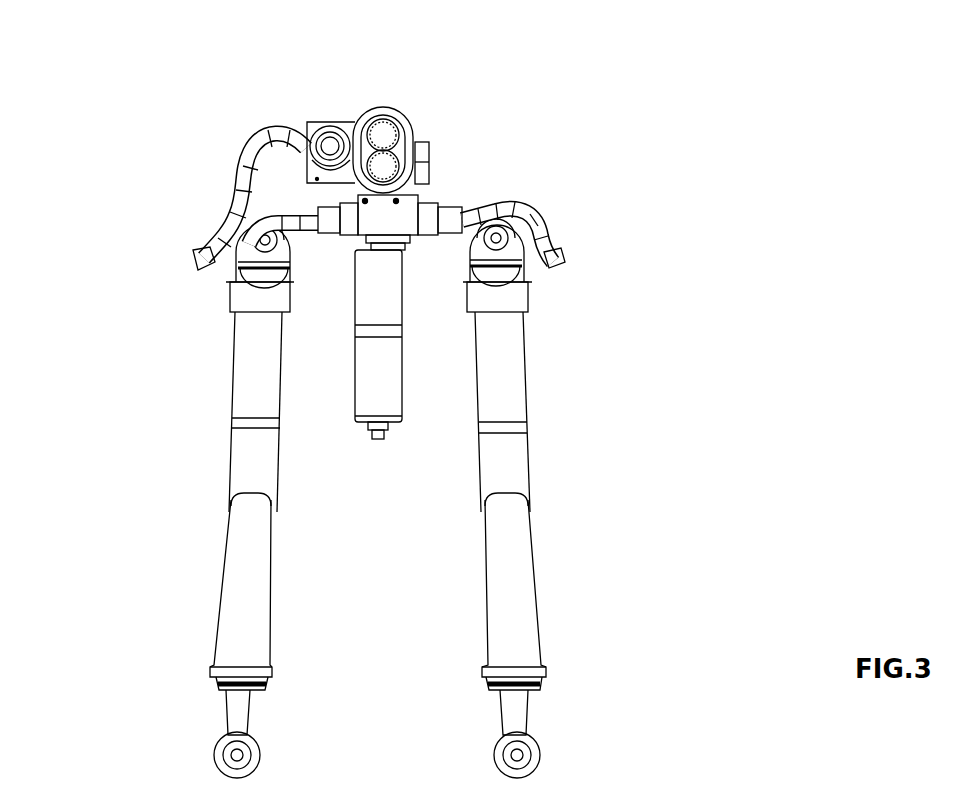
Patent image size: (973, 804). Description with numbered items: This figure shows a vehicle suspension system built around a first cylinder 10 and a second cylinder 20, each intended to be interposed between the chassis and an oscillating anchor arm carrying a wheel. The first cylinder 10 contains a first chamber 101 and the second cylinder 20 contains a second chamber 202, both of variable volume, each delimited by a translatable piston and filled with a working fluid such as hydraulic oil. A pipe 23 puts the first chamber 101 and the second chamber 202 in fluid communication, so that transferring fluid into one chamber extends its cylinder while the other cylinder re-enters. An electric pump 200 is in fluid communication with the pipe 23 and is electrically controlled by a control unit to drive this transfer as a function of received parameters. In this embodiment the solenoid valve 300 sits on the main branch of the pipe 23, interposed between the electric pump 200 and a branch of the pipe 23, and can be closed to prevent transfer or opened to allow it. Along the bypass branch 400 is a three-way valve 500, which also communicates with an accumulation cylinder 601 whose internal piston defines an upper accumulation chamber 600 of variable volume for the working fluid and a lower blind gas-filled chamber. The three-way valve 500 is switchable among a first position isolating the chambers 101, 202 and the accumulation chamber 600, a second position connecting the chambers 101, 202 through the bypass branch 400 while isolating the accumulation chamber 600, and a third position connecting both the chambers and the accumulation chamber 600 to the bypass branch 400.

The first cylinder 10 is at (220, 617).
The first chamber 101 is at (247, 367).
The second cylinder 20 is at (533, 602).
The second chamber 202 is at (522, 377).
The pipe 23 is at (247, 147).
The electric pump 200 is at (386, 108).
The solenoid valve 300 is at (323, 120).
The bypass branch 400 is at (230, 208).
The three-way valve 500 is at (385, 215).
The accumulation chamber 600 is at (385, 302).
The accumulation cylinder 601 is at (357, 420).